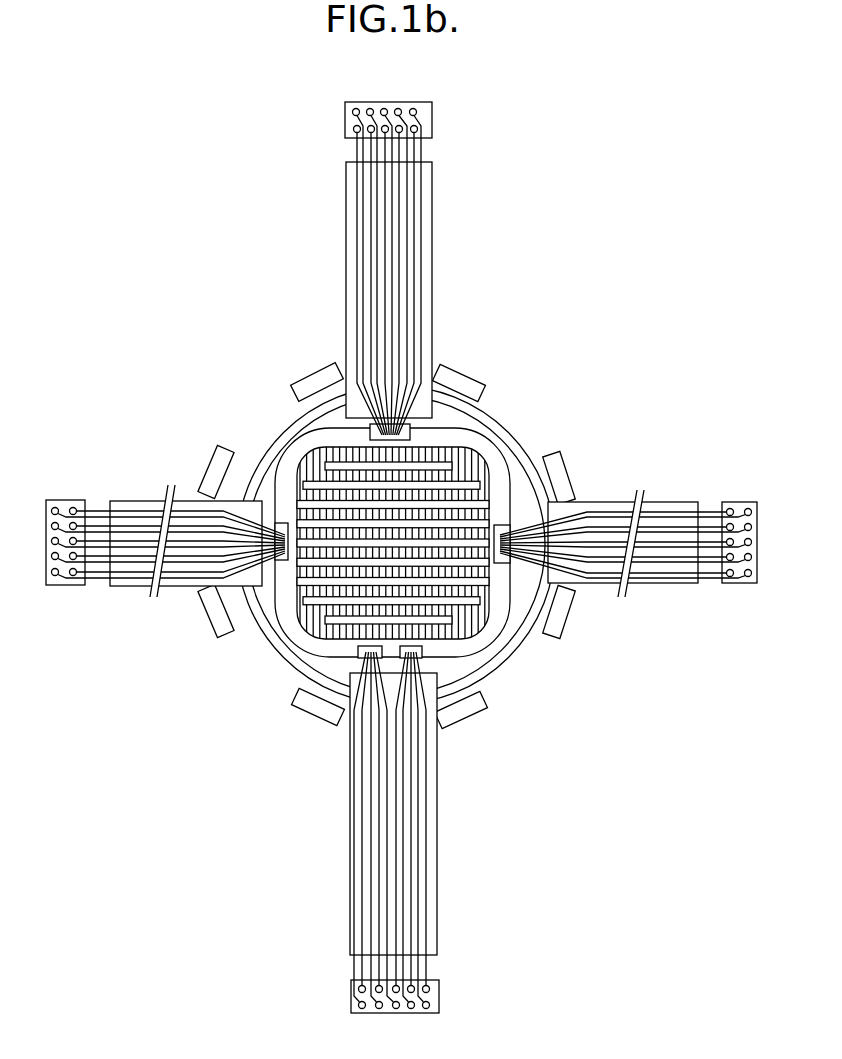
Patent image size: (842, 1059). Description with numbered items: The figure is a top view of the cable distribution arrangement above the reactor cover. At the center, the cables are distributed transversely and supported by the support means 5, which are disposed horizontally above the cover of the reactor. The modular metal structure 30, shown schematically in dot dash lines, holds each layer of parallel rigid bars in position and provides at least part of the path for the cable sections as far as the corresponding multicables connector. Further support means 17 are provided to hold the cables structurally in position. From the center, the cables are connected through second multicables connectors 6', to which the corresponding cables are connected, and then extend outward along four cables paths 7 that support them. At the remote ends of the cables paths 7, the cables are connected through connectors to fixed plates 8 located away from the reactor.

The transverse support means 5 is at (467, 605).
The second multicables connector 6' is at (393, 540).
The cables path 7 is at (432, 220).
The fixed plates 8 is at (432, 112).
The support means 17 is at (458, 440).
The modular metal structure 30 is at (347, 517).